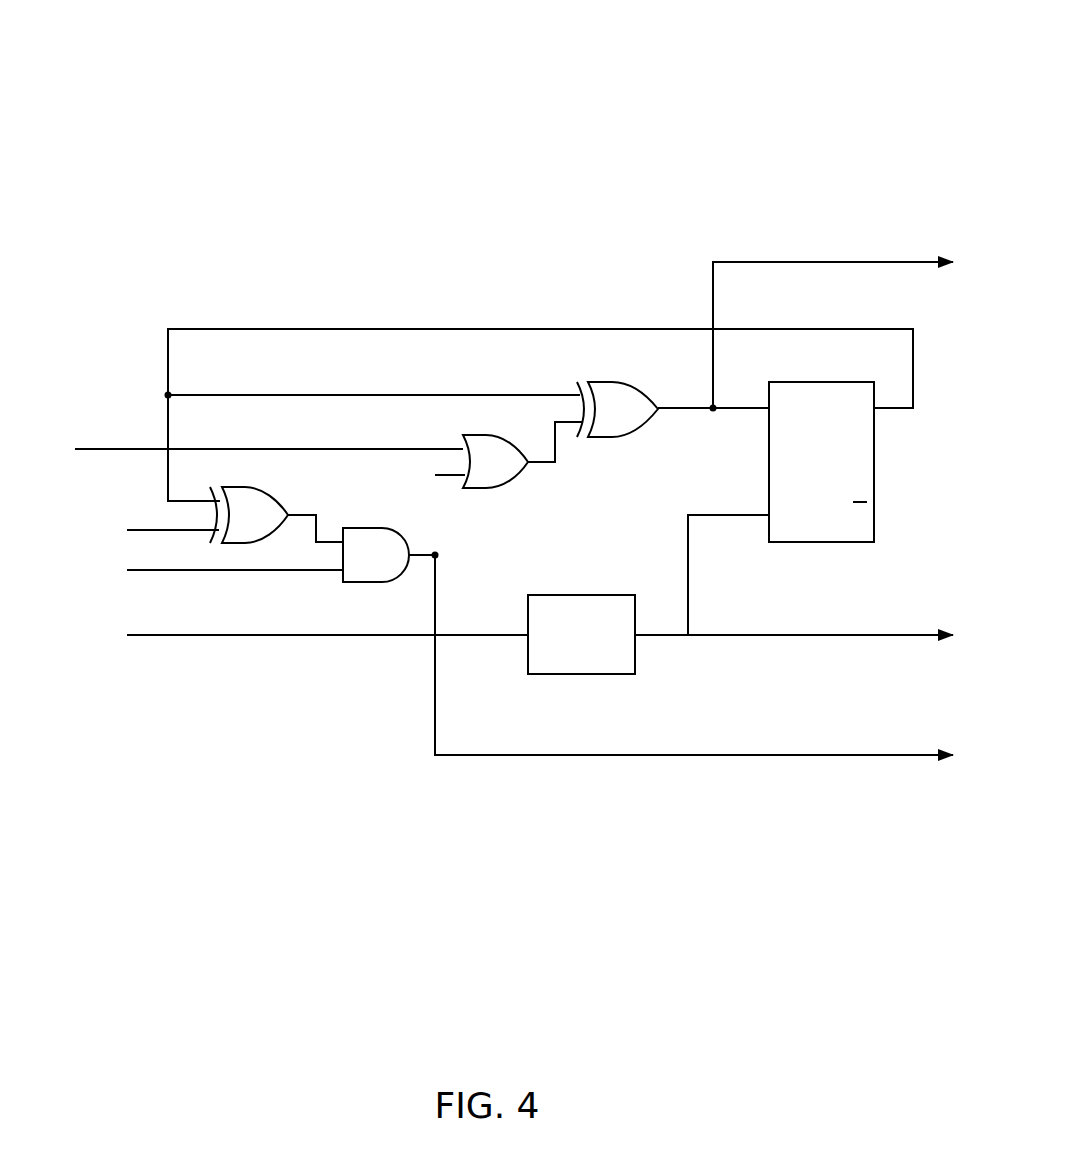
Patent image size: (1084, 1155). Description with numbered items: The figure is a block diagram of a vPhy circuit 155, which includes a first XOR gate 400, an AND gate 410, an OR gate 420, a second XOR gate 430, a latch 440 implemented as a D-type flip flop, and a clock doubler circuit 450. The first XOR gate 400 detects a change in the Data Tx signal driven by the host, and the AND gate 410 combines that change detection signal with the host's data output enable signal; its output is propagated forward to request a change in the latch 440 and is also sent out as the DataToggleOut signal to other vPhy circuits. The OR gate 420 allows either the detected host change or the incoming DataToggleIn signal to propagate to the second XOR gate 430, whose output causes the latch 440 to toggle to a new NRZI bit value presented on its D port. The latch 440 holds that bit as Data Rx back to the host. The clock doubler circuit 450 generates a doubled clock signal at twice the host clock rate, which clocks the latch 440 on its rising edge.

The vPhy circuit 155 is at (474, 55).
The first XOR gate 400 is at (252, 479).
The AND gate 410 is at (362, 519).
The OR gate 420 is at (466, 428).
The second XOR gate 430 is at (606, 374).
The latch 440 is at (808, 484).
The clock doubler circuit 450 is at (567, 666).